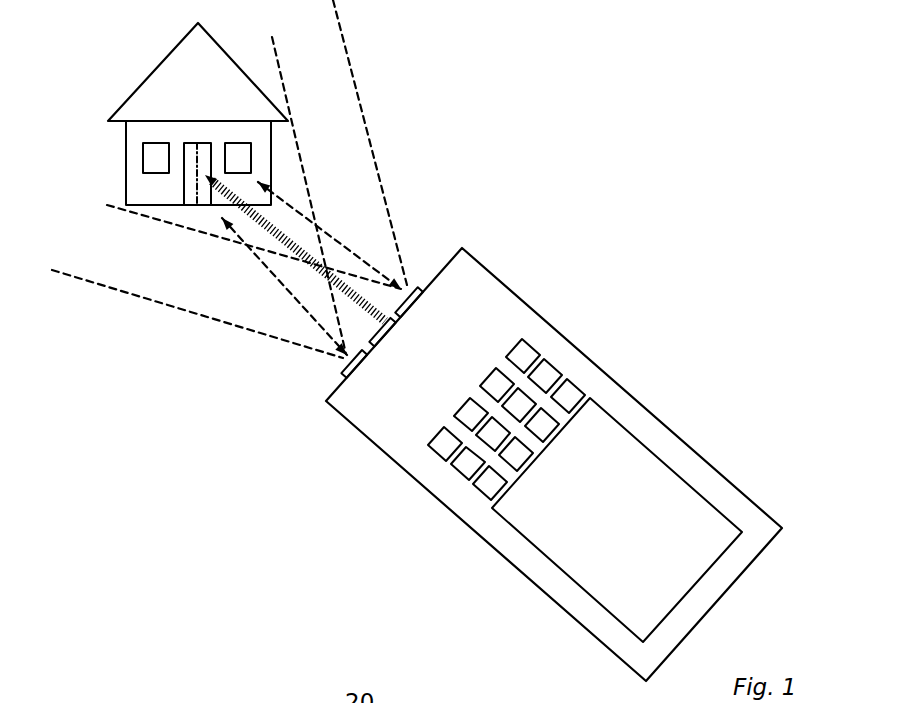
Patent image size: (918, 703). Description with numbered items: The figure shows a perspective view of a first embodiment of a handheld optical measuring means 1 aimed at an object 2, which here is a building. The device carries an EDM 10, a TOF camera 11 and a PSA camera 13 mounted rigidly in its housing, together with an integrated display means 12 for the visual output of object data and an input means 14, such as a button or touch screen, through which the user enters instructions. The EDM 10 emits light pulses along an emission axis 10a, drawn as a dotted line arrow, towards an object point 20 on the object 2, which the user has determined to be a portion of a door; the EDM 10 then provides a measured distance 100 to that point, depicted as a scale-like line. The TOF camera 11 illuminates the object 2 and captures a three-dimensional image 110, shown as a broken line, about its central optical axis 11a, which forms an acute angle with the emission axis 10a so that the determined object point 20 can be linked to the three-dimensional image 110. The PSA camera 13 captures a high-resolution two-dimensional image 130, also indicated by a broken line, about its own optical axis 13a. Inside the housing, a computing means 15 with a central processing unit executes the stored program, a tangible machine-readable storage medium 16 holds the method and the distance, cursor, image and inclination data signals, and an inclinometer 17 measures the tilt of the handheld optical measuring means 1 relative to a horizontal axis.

The handheld optical measuring means 1 is at (650, 377).
The object 2 is at (172, 77).
The EDM 10 is at (393, 328).
The emission axis 10a is at (221, 248).
The measured distance 100 is at (250, 252).
The TOF camera 11 is at (410, 283).
The optical axis 11a is at (343, 248).
The 3D image 110 is at (358, 97).
The integrated display means 12 is at (632, 536).
The PSA camera 13 is at (340, 373).
The optical axis 13a is at (277, 277).
The 2D image 130 is at (212, 315).
The input means 14 is at (442, 482).
The computing means 15 is at (265, 436).
The tangible machine-readable storage medium 16 is at (265, 436).
The inclinometer 17 is at (374, 419).
The object point 20 is at (200, 170).